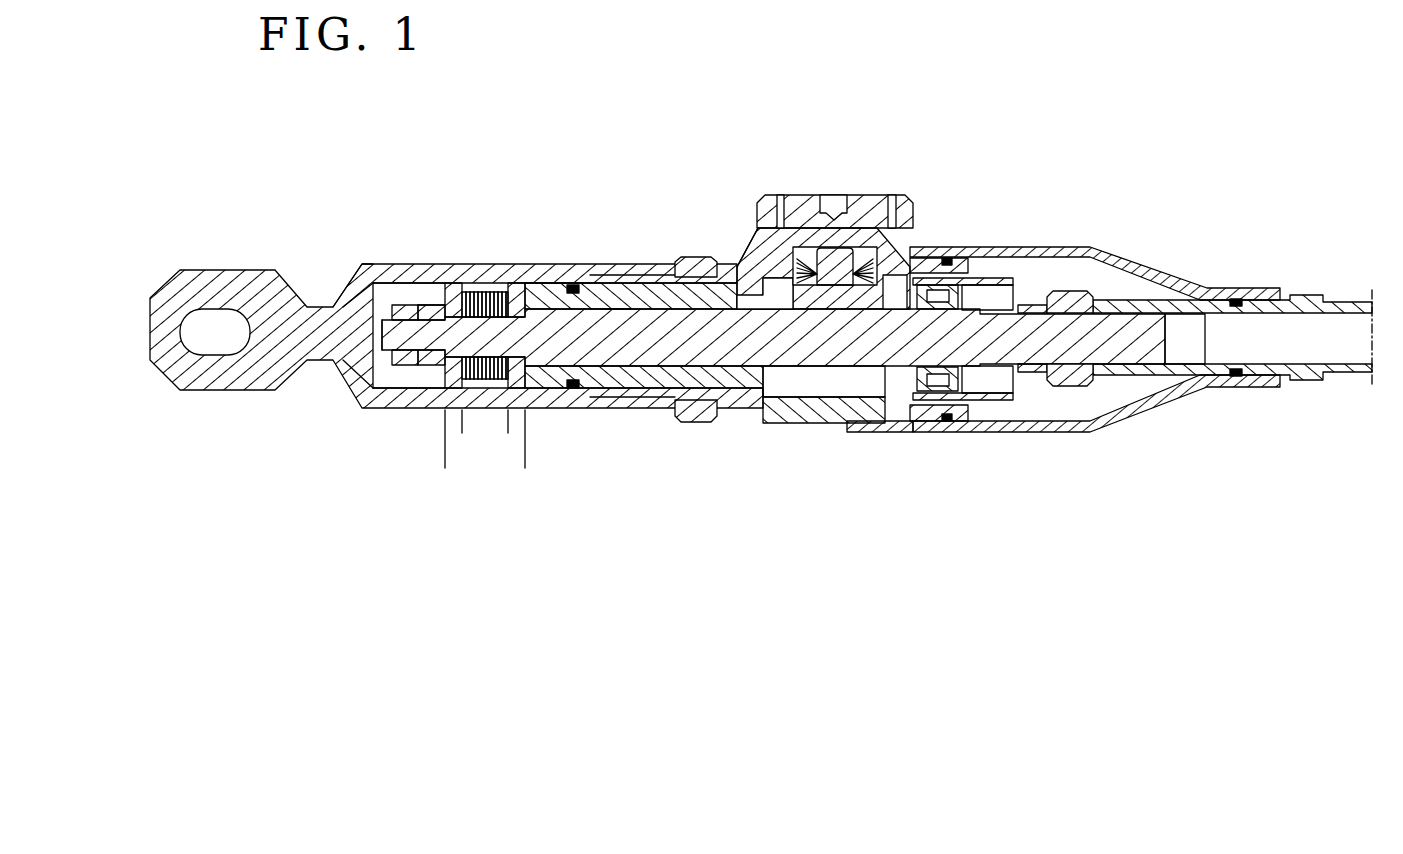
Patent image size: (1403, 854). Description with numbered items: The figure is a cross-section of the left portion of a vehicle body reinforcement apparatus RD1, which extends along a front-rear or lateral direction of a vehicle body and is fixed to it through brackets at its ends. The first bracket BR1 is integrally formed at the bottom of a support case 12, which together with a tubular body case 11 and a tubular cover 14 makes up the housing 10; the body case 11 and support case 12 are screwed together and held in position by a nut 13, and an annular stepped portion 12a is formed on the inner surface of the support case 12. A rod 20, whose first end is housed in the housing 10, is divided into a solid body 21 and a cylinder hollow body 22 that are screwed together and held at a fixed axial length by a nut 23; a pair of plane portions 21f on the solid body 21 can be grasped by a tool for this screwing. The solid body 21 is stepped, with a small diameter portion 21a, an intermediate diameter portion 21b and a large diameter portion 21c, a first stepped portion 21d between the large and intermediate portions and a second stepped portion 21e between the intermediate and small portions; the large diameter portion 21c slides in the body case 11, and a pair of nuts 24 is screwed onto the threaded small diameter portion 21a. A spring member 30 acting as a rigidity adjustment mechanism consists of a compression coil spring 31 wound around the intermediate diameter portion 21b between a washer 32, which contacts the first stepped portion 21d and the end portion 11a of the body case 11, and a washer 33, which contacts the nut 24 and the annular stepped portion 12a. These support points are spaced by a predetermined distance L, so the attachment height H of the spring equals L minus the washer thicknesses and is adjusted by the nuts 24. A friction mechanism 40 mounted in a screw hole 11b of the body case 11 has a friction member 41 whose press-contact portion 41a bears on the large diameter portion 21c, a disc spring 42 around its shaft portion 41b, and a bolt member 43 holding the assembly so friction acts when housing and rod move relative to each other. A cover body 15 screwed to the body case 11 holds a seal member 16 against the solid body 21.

The first bracket BR1 is at (264, 270).
The vehicle body reinforcement apparatus RD1 is at (646, 233).
The housing 10 is at (822, 432).
The body case 11 is at (705, 326).
The end portion 11a is at (540, 281).
The screw hole 11b is at (812, 300).
The support case 12 is at (358, 392).
The annular stepped portion 12a is at (446, 281).
The nut 13 is at (682, 419).
The cover 14 is at (1028, 433).
The cover body 15 is at (979, 402).
The seal member 16 is at (920, 395).
The rod 20 is at (858, 374).
The solid body 21 is at (778, 357).
The small diameter portion 21a is at (390, 345).
The intermediate diameter portion 21b is at (437, 352).
The large diameter portion 21c is at (613, 347).
The first stepped portion 21d is at (566, 280).
The second stepped portion 21e is at (427, 297).
The plane portions 21f is at (1019, 303).
The cylinder hollow body 22 is at (1312, 381).
The nut 23 is at (1072, 386).
The nuts 24 is at (373, 264).
The spring member 30 is at (487, 273).
The compression coil spring 31 is at (481, 297).
The washer 32 is at (518, 281).
The washer 33 is at (460, 281).
The friction mechanism 40 is at (835, 177).
The friction member 41 is at (828, 218).
The press-contact portion 41a is at (742, 292).
The shaft portion 41b is at (828, 265).
The disc spring 42 is at (879, 291).
The bolt member 43 is at (877, 210).
The attachment height H is at (507, 418).
The predetermined distance L is at (524, 457).